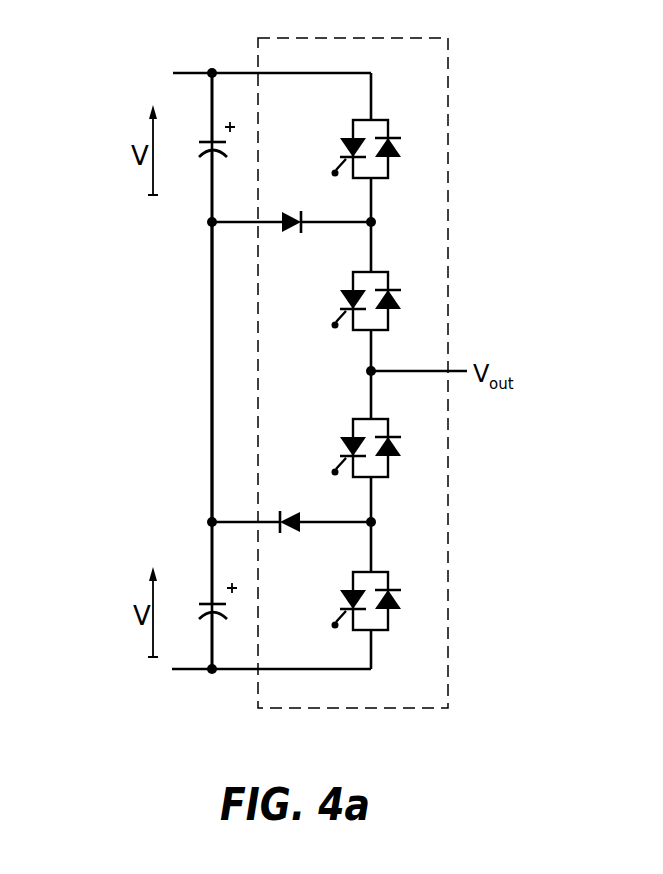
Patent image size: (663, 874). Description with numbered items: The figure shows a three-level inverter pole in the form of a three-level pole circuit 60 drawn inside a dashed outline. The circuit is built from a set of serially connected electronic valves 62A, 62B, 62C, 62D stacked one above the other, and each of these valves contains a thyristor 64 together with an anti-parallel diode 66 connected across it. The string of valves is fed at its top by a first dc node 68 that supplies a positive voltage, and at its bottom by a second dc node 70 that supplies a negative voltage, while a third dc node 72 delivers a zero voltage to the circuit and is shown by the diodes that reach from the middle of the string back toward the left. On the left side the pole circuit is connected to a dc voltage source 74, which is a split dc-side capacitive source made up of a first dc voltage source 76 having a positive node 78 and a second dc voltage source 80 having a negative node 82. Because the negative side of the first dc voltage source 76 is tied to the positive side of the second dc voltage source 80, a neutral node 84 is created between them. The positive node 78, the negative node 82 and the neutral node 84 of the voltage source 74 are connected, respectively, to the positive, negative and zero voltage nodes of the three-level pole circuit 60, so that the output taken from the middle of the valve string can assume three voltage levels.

The three-level pole circuit 60 is at (365, 38).
The electronic valve 62A is at (381, 120).
The electronic valve 62B is at (381, 272).
The electronic valve 62C is at (383, 419).
The electronic valve 62D is at (381, 572).
The thyristor 64 is at (341, 150).
The anti-parallel diode 66 is at (401, 147).
The first dc node 68 is at (300, 72).
The second dc node 70 is at (302, 672).
The third dc node 72 is at (268, 221).
The dc voltage source 74 is at (132, 378).
The first dc voltage source 76 is at (186, 155).
The positive node 78 is at (212, 70).
The second dc voltage source 80 is at (202, 606).
The negative node 82 is at (213, 676).
The neutral node 84 is at (211, 385).